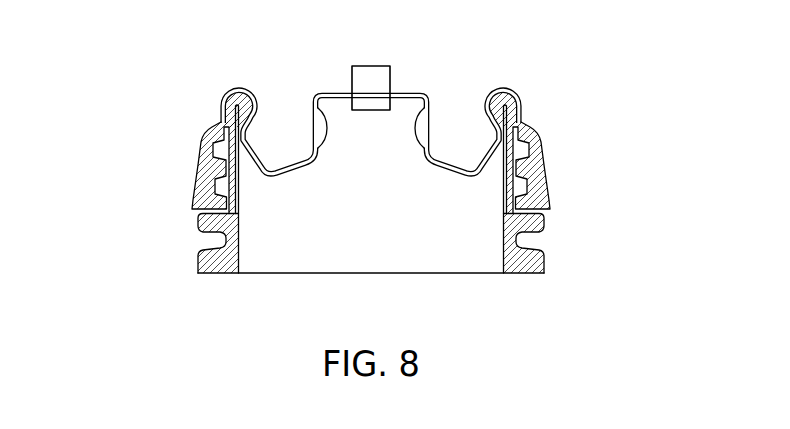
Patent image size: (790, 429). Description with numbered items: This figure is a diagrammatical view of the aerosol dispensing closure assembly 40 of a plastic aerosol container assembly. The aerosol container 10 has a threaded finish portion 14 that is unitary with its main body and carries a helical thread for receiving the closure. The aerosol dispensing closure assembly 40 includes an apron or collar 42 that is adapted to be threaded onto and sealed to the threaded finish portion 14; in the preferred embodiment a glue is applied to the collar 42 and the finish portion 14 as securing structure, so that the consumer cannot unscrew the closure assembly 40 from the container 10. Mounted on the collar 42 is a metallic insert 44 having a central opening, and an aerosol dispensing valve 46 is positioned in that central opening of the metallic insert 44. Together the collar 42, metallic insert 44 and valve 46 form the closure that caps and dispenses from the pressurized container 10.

The plastic aerosol container 10 is at (569, 240).
The threaded finish portion 14 is at (170, 230).
The aerosol dispensing closure assembly 40 is at (540, 123).
The collar 42 is at (549, 178).
The metallic insert 44 is at (427, 126).
The aerosol dispensing valve 46 is at (372, 65).